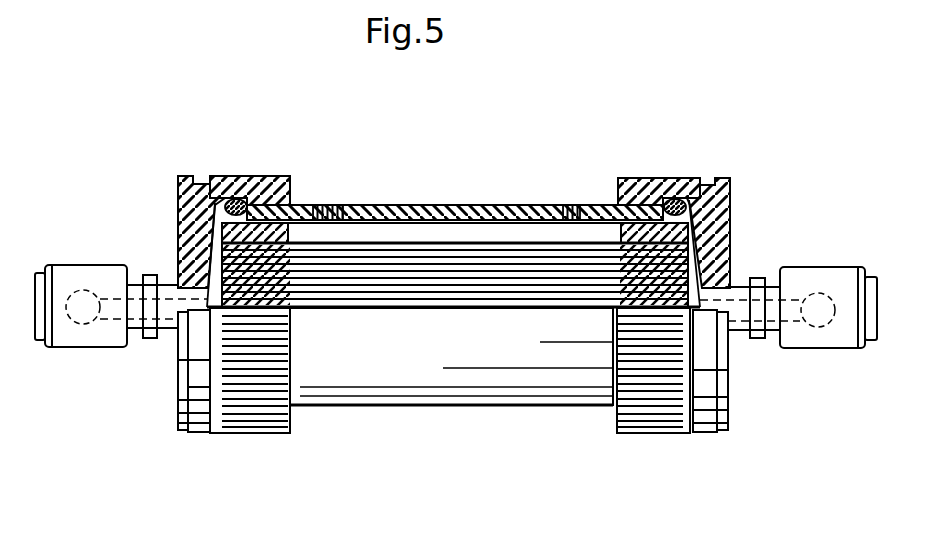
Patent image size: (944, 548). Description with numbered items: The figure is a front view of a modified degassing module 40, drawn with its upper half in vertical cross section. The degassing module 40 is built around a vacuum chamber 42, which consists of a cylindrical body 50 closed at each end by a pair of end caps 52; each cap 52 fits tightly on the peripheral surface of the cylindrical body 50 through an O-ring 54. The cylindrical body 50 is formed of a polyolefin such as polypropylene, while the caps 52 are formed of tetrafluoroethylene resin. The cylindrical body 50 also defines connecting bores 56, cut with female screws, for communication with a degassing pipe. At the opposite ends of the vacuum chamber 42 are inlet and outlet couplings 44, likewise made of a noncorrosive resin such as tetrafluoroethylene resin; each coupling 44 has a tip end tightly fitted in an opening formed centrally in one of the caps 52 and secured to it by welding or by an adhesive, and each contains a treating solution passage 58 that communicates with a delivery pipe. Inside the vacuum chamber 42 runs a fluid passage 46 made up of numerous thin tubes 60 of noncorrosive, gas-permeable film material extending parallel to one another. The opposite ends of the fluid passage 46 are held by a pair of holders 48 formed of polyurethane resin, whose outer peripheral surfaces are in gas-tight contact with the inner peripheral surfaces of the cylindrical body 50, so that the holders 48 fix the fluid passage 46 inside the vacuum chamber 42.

The degassing module 40 is at (530, 195).
The vacuum chamber 42 is at (439, 414).
The inlet and outlet couplings 44 is at (73, 340).
The fluid passage 46 is at (496, 243).
The holders 48 is at (193, 223).
The cylindrical body 50 is at (459, 204).
The end caps 52 is at (260, 180).
The O-ring 54 is at (202, 190).
The connecting bores 56 is at (335, 203).
The treating solution passages 58 is at (149, 340).
The thin tubes 60 is at (411, 240).